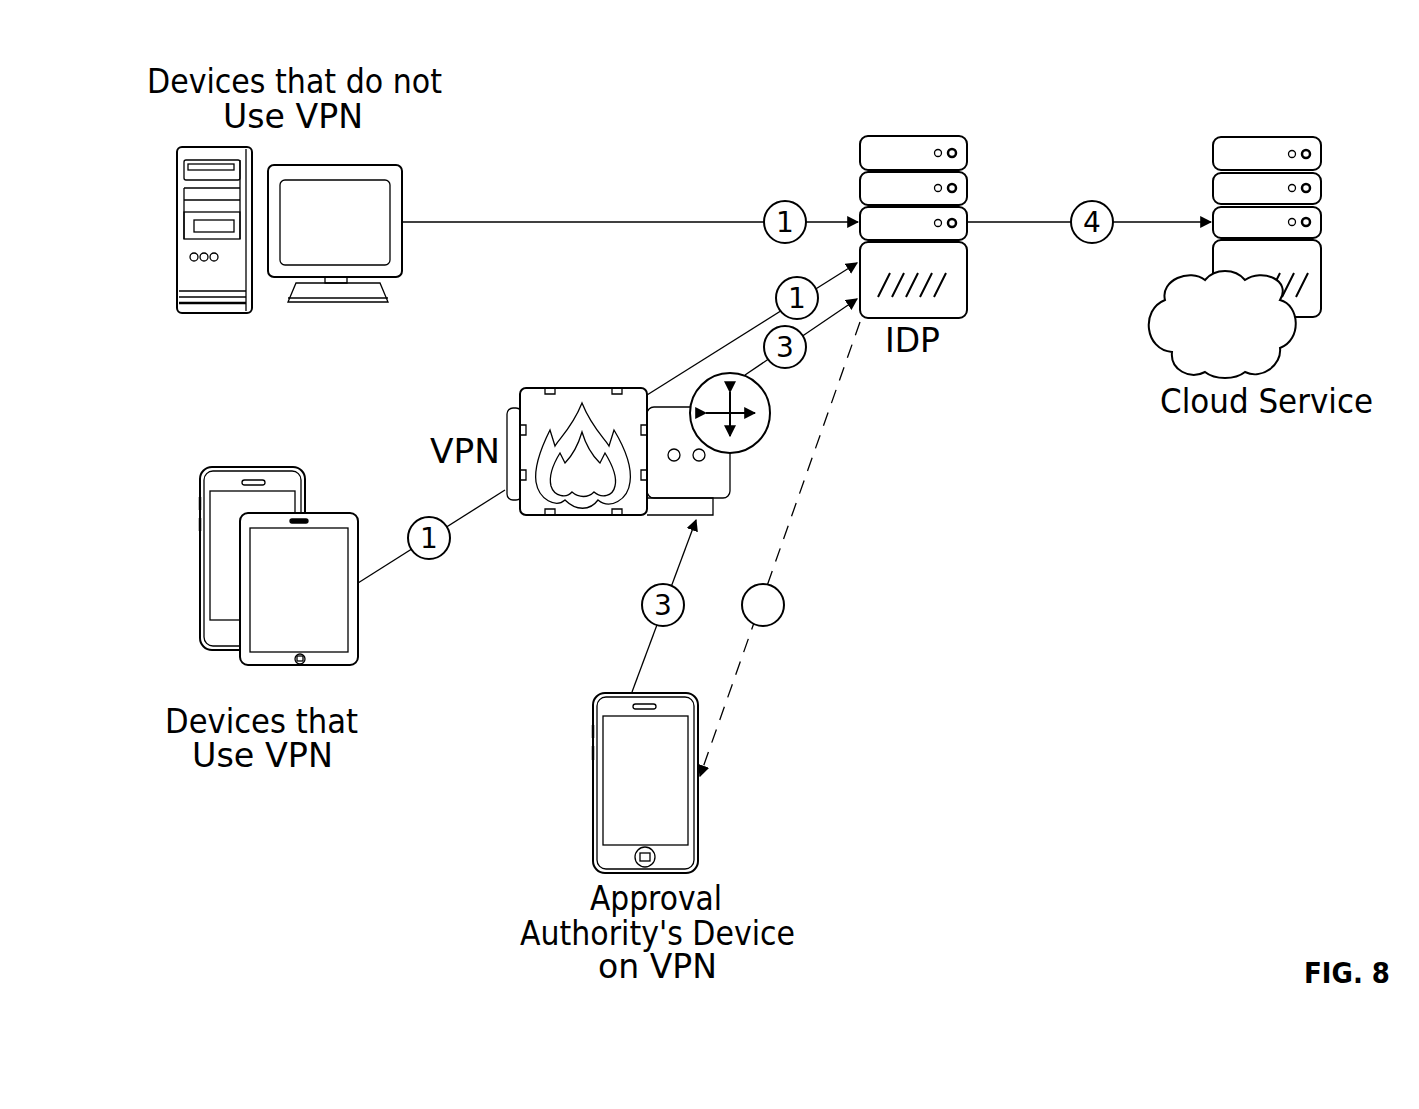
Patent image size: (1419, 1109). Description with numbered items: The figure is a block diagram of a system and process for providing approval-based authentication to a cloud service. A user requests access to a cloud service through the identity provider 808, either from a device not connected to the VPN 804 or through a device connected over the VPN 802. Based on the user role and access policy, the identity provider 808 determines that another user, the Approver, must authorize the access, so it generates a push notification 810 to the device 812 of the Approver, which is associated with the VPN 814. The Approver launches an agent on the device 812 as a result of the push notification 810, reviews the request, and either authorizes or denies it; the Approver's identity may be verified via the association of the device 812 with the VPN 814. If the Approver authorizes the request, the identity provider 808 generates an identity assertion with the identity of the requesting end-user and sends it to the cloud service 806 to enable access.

The device connected over the VPN 802 is at (200, 612).
The device not connected to the VPN 804 is at (403, 262).
The cloud service 806 is at (1268, 137).
The identity provider 808 is at (915, 136).
The push notification 810 is at (828, 455).
The device of the Approver 812 is at (590, 780).
The VPN 814 is at (580, 518).